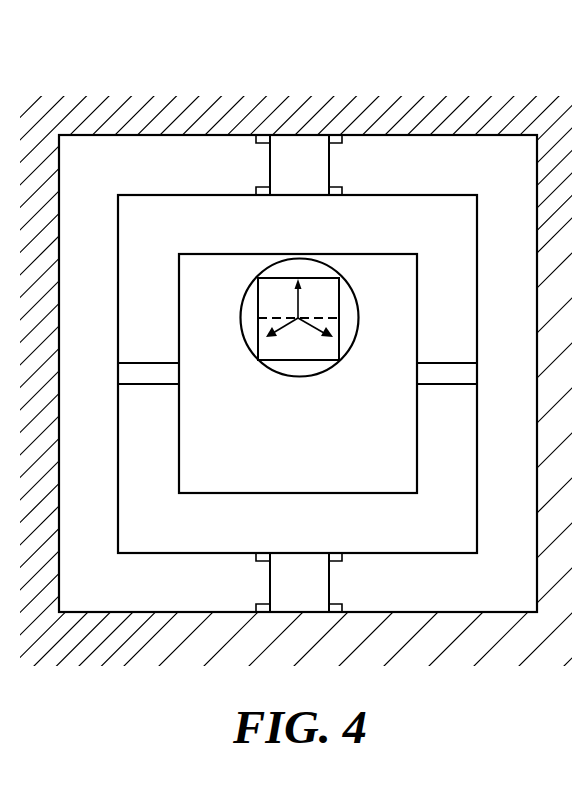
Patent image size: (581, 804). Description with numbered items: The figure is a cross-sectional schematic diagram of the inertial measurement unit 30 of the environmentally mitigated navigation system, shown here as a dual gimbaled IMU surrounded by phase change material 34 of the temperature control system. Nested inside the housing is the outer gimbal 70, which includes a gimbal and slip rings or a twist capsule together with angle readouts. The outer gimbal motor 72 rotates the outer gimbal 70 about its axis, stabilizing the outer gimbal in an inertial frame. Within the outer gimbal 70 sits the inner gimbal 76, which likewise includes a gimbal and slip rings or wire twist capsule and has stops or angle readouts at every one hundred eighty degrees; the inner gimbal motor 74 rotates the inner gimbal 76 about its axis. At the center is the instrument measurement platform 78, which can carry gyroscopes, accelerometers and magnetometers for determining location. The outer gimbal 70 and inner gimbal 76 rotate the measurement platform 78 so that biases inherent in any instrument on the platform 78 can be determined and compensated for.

The inertial measurement unit 30 is at (159, 63).
The phase change material 34 is at (143, 637).
The outer gimbal 70 is at (478, 315).
The outer gimbal motor 72 is at (272, 587).
The inner gimbal motor 74 is at (447, 386).
The inner gimbal 76 is at (178, 303).
The instrument measurement platform 78 is at (258, 301).